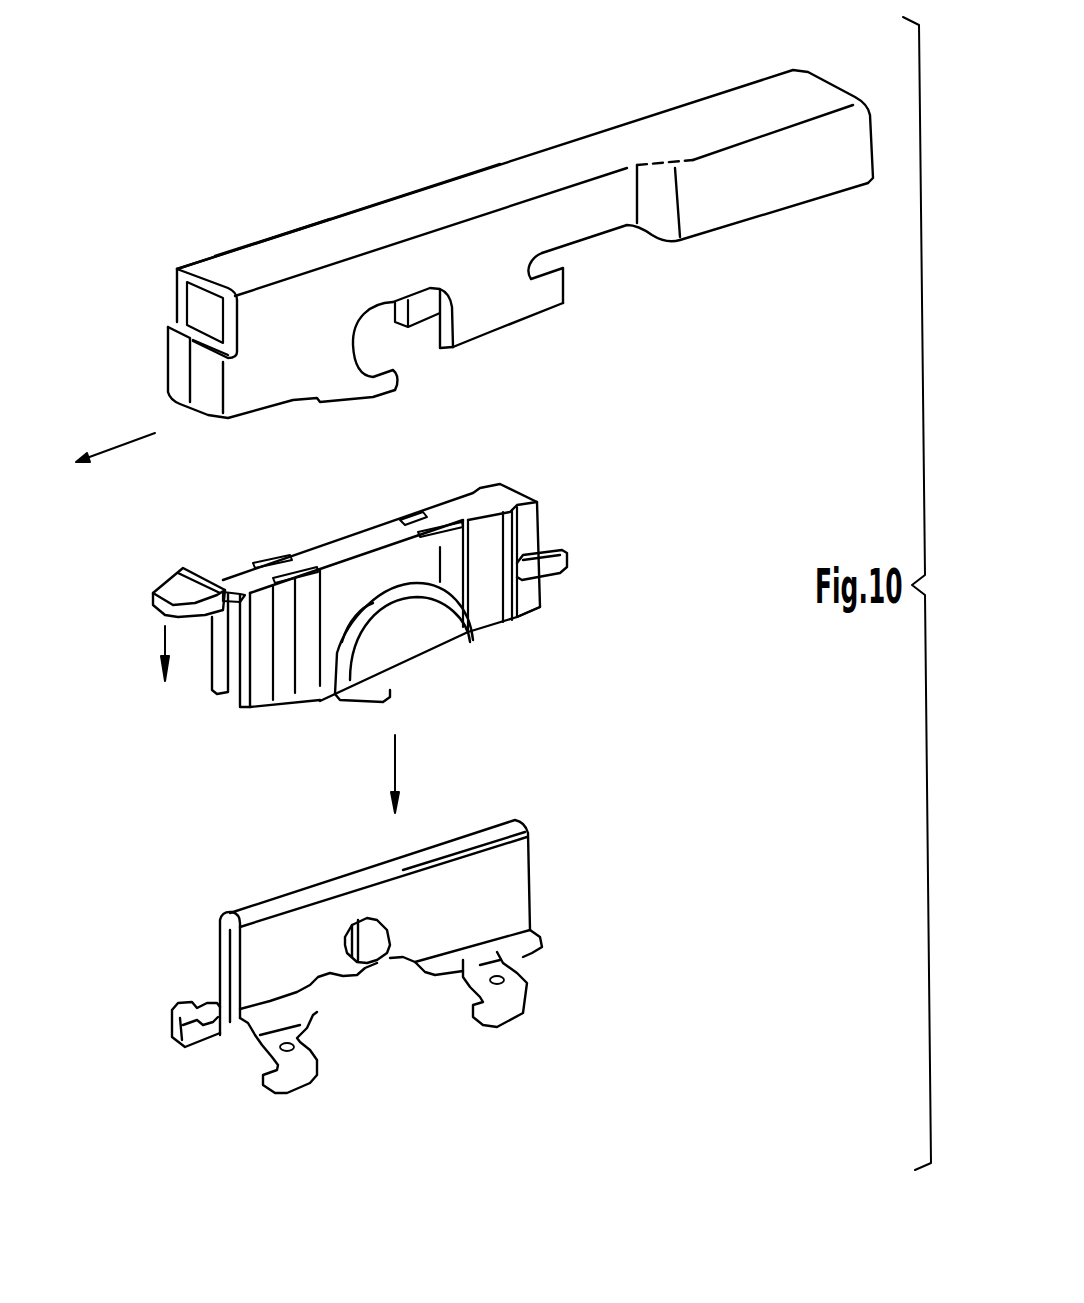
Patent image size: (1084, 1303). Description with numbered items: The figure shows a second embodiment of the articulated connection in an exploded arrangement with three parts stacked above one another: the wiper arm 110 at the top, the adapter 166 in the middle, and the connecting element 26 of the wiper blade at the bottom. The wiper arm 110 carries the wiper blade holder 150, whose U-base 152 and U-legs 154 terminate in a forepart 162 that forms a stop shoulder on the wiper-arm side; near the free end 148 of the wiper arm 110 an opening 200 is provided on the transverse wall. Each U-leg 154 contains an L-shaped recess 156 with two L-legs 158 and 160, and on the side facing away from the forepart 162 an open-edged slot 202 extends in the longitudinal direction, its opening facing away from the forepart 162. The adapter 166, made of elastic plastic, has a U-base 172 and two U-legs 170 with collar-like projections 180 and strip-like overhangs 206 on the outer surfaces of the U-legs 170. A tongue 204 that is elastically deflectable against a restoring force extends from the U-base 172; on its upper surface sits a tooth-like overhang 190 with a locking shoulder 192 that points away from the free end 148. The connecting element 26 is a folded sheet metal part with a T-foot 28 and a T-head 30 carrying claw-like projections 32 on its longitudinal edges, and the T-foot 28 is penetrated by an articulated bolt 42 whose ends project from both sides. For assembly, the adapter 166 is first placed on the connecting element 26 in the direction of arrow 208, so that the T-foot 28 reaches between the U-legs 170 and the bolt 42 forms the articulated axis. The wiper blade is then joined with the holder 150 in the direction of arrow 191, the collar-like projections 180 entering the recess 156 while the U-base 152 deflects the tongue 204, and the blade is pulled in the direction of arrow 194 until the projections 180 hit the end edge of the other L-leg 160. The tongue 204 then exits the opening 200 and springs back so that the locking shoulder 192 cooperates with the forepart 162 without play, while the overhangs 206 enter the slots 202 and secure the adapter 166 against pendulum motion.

The wiper arm 110 is at (657, 112).
The free end 148 is at (205, 249).
The wiper blade holder 150 is at (338, 213).
The U-base 152 is at (231, 247).
The U-legs 154 is at (288, 382).
The recess 156 is at (400, 335).
The L-leg 158 is at (418, 360).
The L-leg 160 is at (377, 337).
The forepart 162 is at (177, 270).
The opening 200 is at (193, 306).
The slot 202 is at (557, 258).
The arrow 194 is at (138, 445).
The adapter 166 is at (540, 503).
The U-legs 170 is at (267, 697).
The U-base 172 is at (340, 552).
The collar-like projections 180 is at (332, 688).
The tooth-like overhang 190 is at (178, 578).
The arrow 191 is at (163, 638).
The locking shoulder 192 is at (230, 590).
The tongue 204 is at (206, 628).
The strip-like overhangs 206 is at (565, 560).
The arrow 208 is at (398, 755).
The connecting element 26 is at (535, 883).
The T-foot 28 is at (520, 860).
The T-head 30 is at (232, 1060).
The claw-like projections 32 is at (305, 1075).
The articulated bolt 42 is at (372, 964).